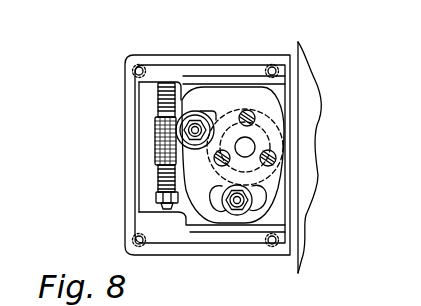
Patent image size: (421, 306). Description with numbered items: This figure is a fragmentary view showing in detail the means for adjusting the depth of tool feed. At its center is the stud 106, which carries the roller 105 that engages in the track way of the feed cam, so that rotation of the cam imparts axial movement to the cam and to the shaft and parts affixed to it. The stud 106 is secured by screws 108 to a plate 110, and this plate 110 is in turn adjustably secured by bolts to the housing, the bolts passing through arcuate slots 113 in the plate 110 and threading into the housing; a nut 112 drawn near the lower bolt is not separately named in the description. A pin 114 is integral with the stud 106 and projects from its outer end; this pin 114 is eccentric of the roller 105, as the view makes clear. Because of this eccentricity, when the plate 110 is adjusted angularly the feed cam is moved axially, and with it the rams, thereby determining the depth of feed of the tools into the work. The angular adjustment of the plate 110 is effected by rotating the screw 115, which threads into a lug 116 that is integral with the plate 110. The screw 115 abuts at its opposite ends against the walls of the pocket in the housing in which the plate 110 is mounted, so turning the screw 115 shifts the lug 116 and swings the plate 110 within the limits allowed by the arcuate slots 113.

The roller 105 is at (250, 185).
The stud 106 is at (253, 146).
The screws 108 is at (255, 115).
The plate 110 is at (226, 92).
The lower nut 112 is at (252, 203).
The arcuate slots 113 is at (198, 113).
The pin 114 is at (253, 139).
The screw 115 is at (157, 176).
The lug 116 is at (156, 130).